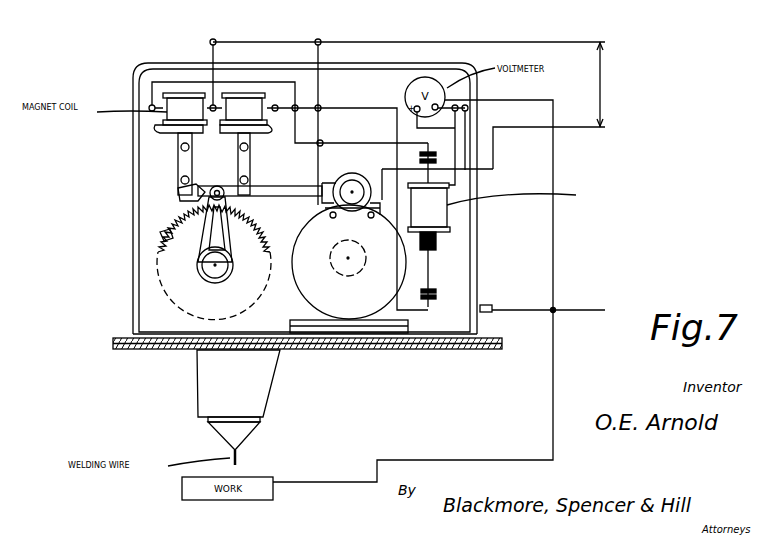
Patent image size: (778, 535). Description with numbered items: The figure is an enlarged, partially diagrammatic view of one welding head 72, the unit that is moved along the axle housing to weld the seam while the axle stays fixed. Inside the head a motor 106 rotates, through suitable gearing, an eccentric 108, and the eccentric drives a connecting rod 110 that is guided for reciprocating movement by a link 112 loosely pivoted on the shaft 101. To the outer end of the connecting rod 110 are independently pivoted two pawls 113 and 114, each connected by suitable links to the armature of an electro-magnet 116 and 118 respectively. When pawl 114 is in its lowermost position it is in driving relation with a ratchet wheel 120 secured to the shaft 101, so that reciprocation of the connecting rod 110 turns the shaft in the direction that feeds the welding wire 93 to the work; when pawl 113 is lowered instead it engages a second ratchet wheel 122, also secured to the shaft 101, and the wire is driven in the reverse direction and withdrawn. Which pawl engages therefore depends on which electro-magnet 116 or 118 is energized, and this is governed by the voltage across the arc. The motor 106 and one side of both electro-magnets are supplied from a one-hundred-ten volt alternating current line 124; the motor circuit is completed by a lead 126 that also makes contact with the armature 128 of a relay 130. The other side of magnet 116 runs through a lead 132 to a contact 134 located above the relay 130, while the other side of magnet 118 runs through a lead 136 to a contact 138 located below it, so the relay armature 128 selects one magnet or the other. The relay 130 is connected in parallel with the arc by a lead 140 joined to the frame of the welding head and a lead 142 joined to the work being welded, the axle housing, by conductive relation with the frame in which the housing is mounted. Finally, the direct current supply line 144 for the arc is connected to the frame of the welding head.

The welding head 72 is at (134, 220).
The welding wire 93 is at (240, 457).
The shaft 101 is at (175, 278).
The motor 106 is at (373, 322).
The eccentric 108 is at (352, 187).
The connecting rod 110 is at (263, 192).
The link 112 is at (218, 232).
The pawl 113 is at (183, 188).
The pawl 114 is at (236, 185).
The electro-magnet 116 is at (168, 117).
The electro-magnet 118 is at (263, 115).
The ratchet wheel 120 is at (243, 232).
The ratchet wheel 122 is at (167, 235).
The alternating current line 124 is at (558, 43).
The lead 126 is at (497, 148).
The armature 128 is at (390, 203).
The relay 130 is at (450, 217).
The lead 132 is at (180, 82).
The contact 134 is at (423, 153).
The lead 136 is at (357, 108).
The contact 138 is at (438, 302).
The lead 140 is at (457, 130).
The lead 142 is at (553, 172).
The direct current supply line 144 is at (537, 312).